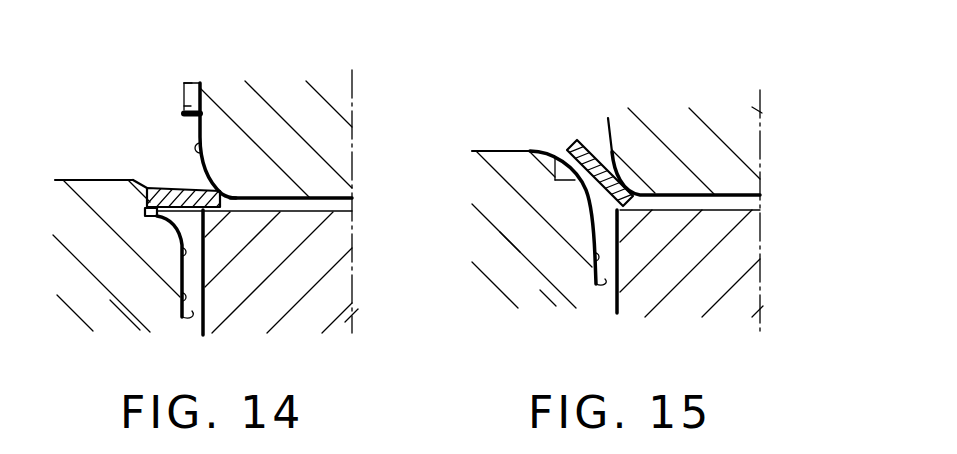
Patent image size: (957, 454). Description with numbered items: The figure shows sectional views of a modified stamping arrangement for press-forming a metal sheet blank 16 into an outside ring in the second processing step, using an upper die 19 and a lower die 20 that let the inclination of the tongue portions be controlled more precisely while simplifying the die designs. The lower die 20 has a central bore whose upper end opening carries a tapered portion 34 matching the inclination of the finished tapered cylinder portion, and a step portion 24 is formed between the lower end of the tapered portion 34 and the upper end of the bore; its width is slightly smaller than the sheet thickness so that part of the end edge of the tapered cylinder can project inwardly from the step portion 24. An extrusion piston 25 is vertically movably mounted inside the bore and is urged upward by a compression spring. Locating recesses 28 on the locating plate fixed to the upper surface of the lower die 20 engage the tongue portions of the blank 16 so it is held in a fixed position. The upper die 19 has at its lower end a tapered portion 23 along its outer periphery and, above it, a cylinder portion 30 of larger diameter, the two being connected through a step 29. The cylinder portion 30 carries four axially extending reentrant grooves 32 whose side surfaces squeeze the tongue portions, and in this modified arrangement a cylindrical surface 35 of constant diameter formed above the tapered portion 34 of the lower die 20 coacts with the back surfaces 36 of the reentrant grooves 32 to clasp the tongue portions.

In FIG. 14, the blank 16 is at (187, 188).
In FIG. 15, the blank 16 is at (592, 147).
In FIG. 14, the upper die 19 is at (333, 185).
In FIG. 15, the upper die 19 is at (745, 142).
In FIG. 14, the lower die 20 is at (100, 192).
In FIG. 15, the lower die 20 is at (517, 160).
In FIG. 14, the tapered portion 23 is at (203, 140).
In FIG. 14, the step portion 24 is at (195, 315).
In FIG. 15, the step portion 24 is at (602, 287).
In FIG. 14, the extrusion piston 25 is at (332, 327).
In FIG. 15, the extrusion piston 25 is at (743, 293).
In FIG. 14, the locating recesses 28 is at (151, 218).
In FIG. 14, the step 29 is at (187, 121).
In FIG. 14, the cylinder portion 30 is at (181, 93).
In FIG. 14, the reentrant grooves 32 is at (183, 106).
In FIG. 14, the tapered portion 34 is at (187, 307).
In FIG. 15, the tapered portion 34 is at (592, 281).
In FIG. 14, the cylindrical surface 35 is at (180, 247).
In FIG. 15, the cylindrical surface 35 is at (590, 228).
In FIG. 14, the back surfaces 36 is at (184, 86).